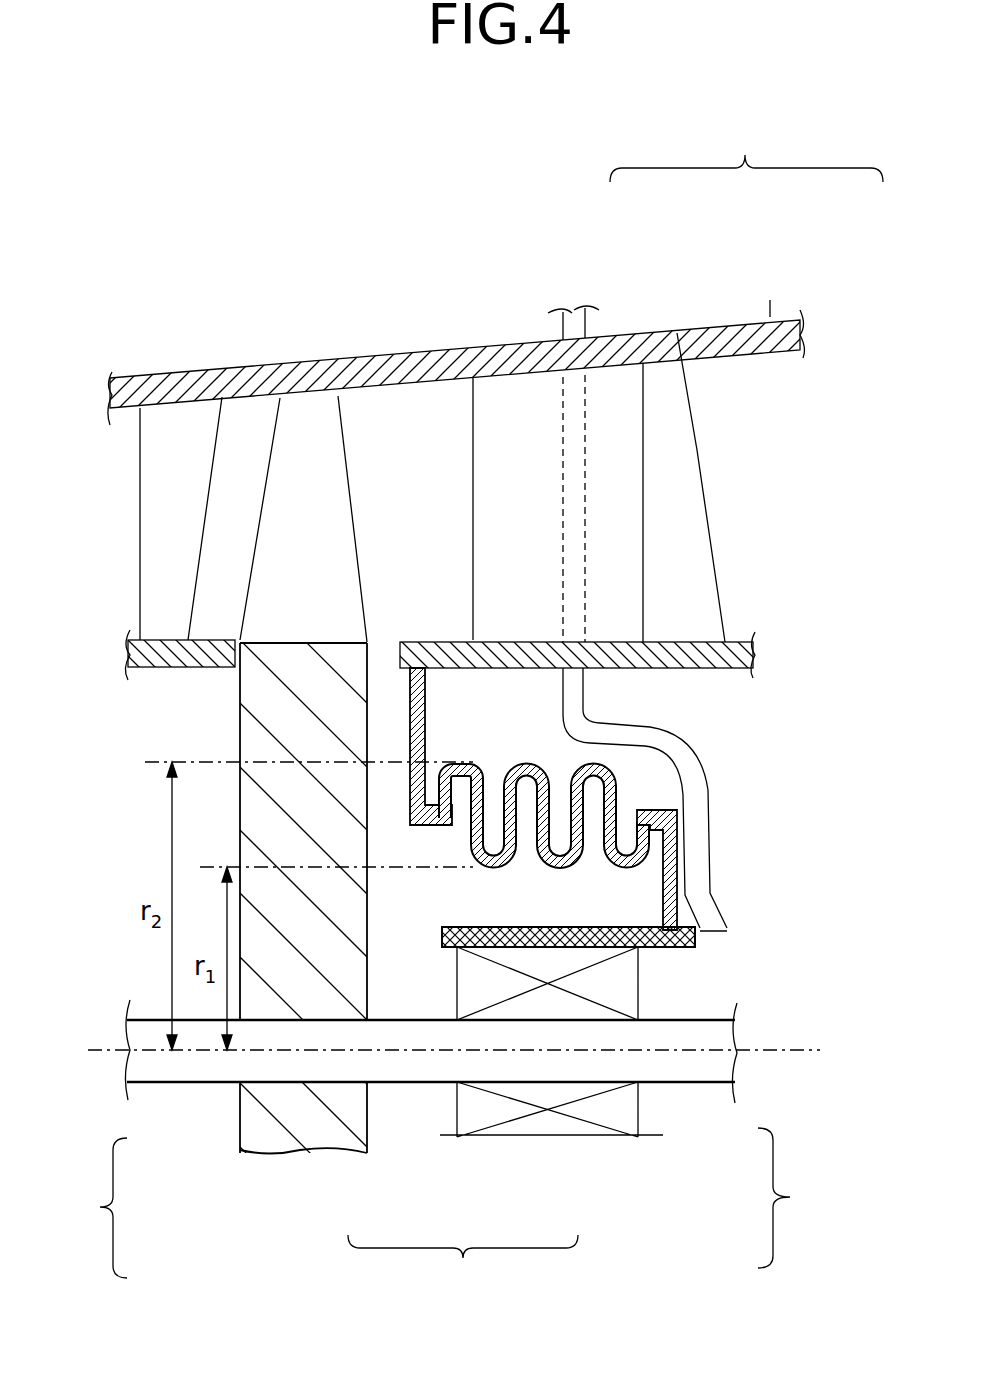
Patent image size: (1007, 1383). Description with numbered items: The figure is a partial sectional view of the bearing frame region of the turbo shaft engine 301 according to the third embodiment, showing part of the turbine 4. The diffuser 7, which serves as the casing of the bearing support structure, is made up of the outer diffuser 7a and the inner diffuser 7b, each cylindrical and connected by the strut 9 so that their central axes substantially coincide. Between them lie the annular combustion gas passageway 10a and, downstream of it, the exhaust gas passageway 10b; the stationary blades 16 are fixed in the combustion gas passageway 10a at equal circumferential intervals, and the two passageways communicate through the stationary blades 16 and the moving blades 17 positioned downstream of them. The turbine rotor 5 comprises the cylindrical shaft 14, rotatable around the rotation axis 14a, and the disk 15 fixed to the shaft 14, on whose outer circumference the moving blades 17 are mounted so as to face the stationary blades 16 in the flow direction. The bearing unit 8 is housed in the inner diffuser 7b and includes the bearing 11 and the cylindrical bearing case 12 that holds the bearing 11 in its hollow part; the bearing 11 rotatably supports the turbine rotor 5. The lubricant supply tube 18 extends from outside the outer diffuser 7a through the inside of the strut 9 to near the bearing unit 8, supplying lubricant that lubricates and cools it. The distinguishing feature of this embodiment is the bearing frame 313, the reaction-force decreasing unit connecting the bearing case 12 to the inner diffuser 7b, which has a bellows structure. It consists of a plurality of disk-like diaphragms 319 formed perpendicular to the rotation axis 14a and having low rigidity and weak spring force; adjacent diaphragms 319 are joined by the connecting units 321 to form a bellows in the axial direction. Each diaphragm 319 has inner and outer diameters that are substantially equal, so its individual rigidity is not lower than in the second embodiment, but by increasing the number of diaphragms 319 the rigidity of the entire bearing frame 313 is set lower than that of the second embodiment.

The turbo shaft engine 301 is at (402, 127).
The turbine 4 is at (402, 349).
The turbine rotor 5 is at (101, 1208).
The diffuser 7 is at (746, 150).
The outer diffuser 7a is at (770, 317).
The inner diffuser 7b is at (677, 333).
The bearing unit 8 is at (785, 1198).
The strut 9 is at (508, 420).
The combustion gas passageway 10a is at (240, 487).
The exhaust gas passageway 10b is at (675, 577).
The bearing 11 is at (688, 950).
The bearing case 12 is at (623, 1113).
The shaft 14 is at (210, 1067).
The rotation axis 14a is at (95, 1050).
The disk 15 is at (277, 1118).
The stationary blades 16 is at (167, 538).
The moving blades 17 is at (287, 601).
The lubricant supply tube 18 is at (712, 834).
The bearing frame 313 is at (512, 1055).
The diaphragms 319 is at (458, 829).
The connecting units 321 is at (495, 866).